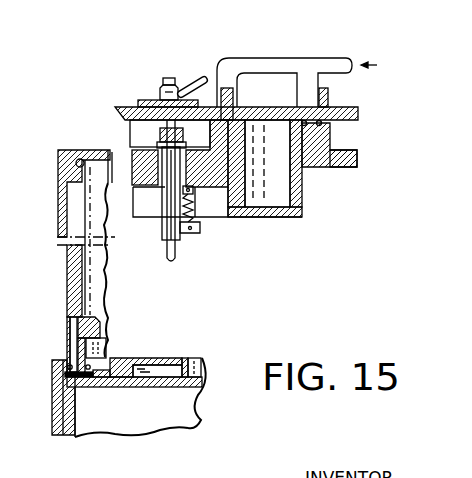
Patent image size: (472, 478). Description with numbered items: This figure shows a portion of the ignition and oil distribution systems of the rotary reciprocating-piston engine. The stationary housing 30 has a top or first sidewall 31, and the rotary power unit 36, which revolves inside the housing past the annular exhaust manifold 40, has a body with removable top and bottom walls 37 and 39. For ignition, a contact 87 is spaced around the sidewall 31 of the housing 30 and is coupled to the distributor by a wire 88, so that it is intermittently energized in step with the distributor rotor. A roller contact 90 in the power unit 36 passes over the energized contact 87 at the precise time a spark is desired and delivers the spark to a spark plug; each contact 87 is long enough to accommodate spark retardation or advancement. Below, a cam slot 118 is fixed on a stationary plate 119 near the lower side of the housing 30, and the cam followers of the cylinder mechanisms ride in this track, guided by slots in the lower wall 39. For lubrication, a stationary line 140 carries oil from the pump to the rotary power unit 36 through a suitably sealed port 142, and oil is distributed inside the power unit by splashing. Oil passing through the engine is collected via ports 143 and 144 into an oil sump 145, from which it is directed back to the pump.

The housing 30 is at (122, 184).
The first sidewall 31 is at (340, 107).
The rotary power unit 36 is at (64, 325).
The top wall 37 is at (330, 168).
The bottom wall 39 is at (102, 332).
The exhaust manifold 40 is at (77, 412).
The contact 87 is at (153, 100).
The wire 88 is at (198, 77).
The roller contact 90 is at (178, 232).
The cam slot 118 is at (197, 358).
The stationary plate 119 is at (200, 401).
The stationary line 140 is at (302, 58).
The sealed port 142 is at (318, 131).
The port 143 is at (107, 292).
The port 144 is at (78, 390).
The oil sump 145 is at (177, 418).